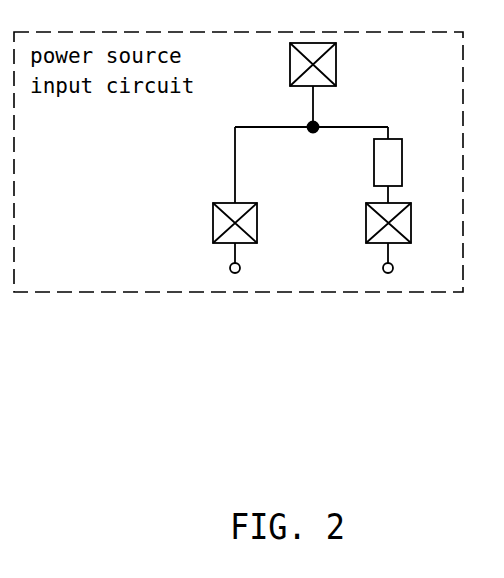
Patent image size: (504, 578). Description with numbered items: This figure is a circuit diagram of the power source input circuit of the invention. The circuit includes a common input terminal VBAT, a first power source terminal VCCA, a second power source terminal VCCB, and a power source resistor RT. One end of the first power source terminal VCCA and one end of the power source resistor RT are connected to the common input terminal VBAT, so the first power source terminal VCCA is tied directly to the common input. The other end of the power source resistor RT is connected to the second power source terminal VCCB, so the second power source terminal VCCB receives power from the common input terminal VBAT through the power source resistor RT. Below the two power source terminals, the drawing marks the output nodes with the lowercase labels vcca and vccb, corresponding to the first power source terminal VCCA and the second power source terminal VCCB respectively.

The common input terminal VBAT is at (275, 64).
The first power source terminal VCCA is at (201, 223).
The second power source terminal VCCB is at (354, 223).
The power source resistor RT is at (411, 162).
The first supply voltage terminal vcca is at (259, 262).
The second supply voltage terminal vccb is at (413, 262).